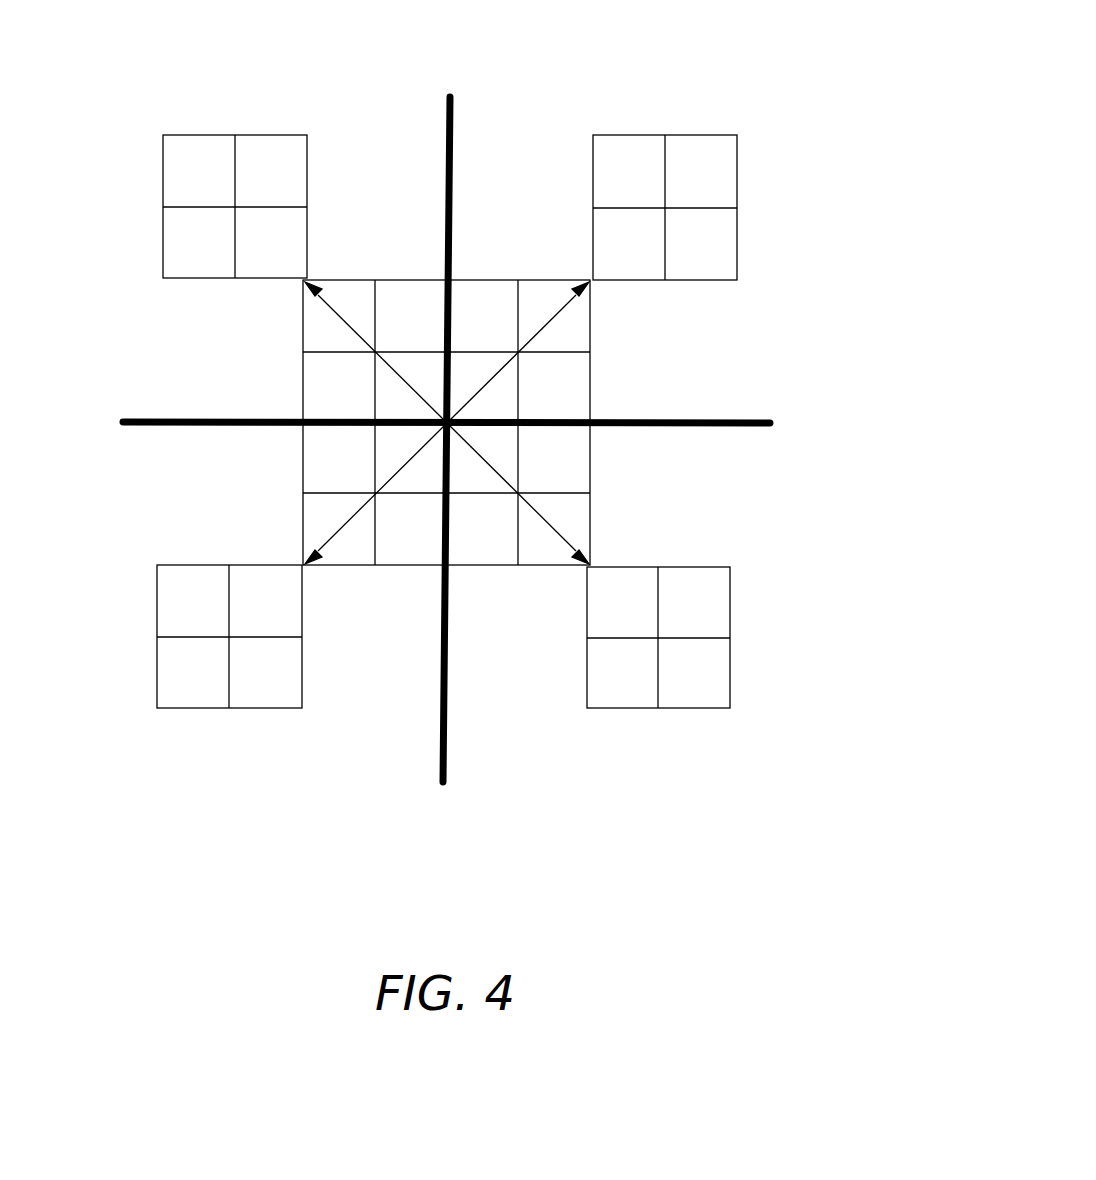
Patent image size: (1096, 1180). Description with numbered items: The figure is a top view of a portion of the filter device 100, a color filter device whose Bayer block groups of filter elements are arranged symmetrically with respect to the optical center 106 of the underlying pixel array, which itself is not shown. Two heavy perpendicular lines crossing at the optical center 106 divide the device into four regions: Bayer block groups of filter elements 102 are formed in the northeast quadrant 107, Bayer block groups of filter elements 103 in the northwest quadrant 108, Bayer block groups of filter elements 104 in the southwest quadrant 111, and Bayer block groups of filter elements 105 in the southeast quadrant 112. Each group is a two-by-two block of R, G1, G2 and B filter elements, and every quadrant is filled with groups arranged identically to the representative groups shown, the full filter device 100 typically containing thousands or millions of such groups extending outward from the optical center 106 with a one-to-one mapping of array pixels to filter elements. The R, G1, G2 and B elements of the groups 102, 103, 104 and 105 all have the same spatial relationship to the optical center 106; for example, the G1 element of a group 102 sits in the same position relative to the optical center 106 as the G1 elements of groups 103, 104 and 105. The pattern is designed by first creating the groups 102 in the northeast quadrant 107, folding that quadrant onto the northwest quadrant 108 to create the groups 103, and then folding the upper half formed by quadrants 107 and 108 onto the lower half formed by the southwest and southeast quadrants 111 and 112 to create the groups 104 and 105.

The filter device 100 is at (768, 58).
The Bayer block groups of filter elements 102 is at (737, 207).
The Bayer block groups of filter elements 103 is at (163, 207).
The Bayer block groups of filter elements 104 is at (303, 493).
The Bayer block groups of filter elements 105 is at (590, 493).
The optical center 106 is at (448, 418).
The northeast quadrant 107 is at (521, 183).
The northwest quadrant 108 is at (378, 183).
The southwest quadrant 111 is at (365, 668).
The southeast quadrant 112 is at (508, 668).